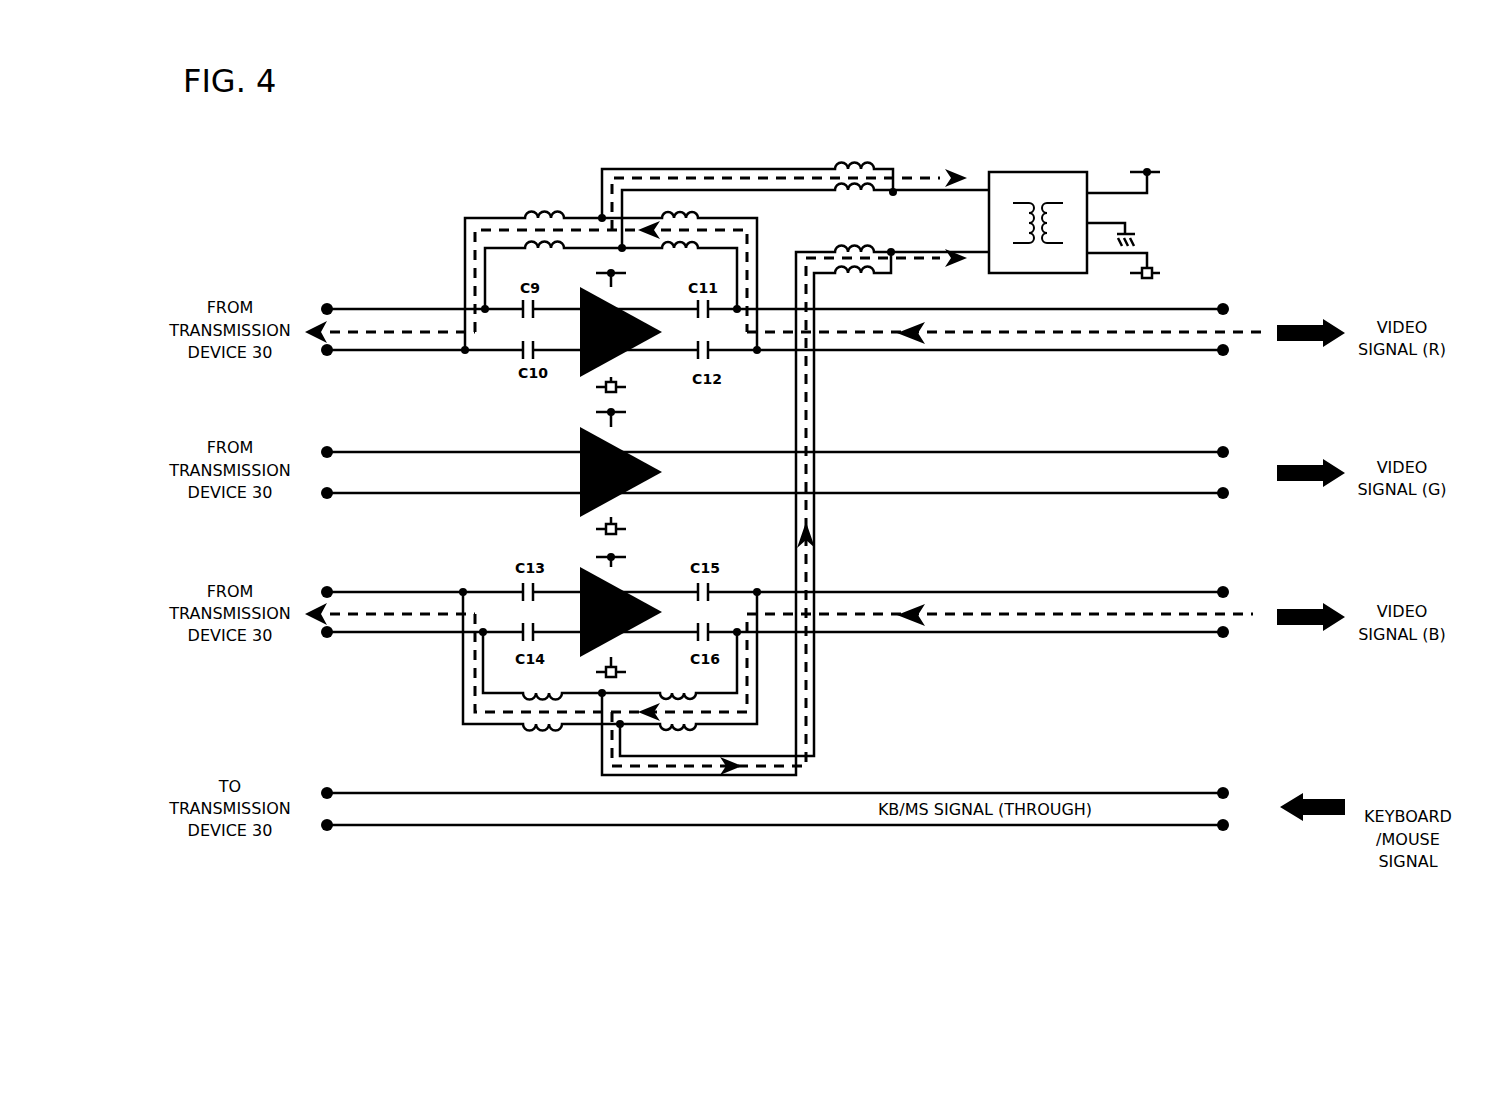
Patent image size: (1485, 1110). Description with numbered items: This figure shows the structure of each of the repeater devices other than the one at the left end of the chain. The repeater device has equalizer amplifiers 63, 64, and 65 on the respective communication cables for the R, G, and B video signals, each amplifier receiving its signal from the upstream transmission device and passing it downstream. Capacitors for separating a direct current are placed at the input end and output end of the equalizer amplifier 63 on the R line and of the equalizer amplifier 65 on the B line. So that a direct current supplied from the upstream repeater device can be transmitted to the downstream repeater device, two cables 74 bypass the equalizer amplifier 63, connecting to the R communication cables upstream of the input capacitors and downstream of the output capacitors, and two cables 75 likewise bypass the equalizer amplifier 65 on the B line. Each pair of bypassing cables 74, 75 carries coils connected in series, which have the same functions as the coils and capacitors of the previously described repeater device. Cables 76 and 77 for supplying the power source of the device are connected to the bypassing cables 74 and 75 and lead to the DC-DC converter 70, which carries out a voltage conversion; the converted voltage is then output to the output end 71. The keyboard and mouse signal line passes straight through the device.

The equalizer amplifier 63 is at (618, 301).
The equalizer amplifier 64 is at (620, 445).
The equalizer amplifier 65 is at (620, 584).
The DC-DC converter 70 is at (1084, 172).
The output end 71 is at (1176, 185).
The cables bypassing the equalizer amplifier 74 is at (492, 217).
The cables bypassing the equalizer amplifier 75 is at (462, 696).
The cable for supplying the power source 76 is at (728, 168).
The cable for supplying the power source 77 is at (795, 430).